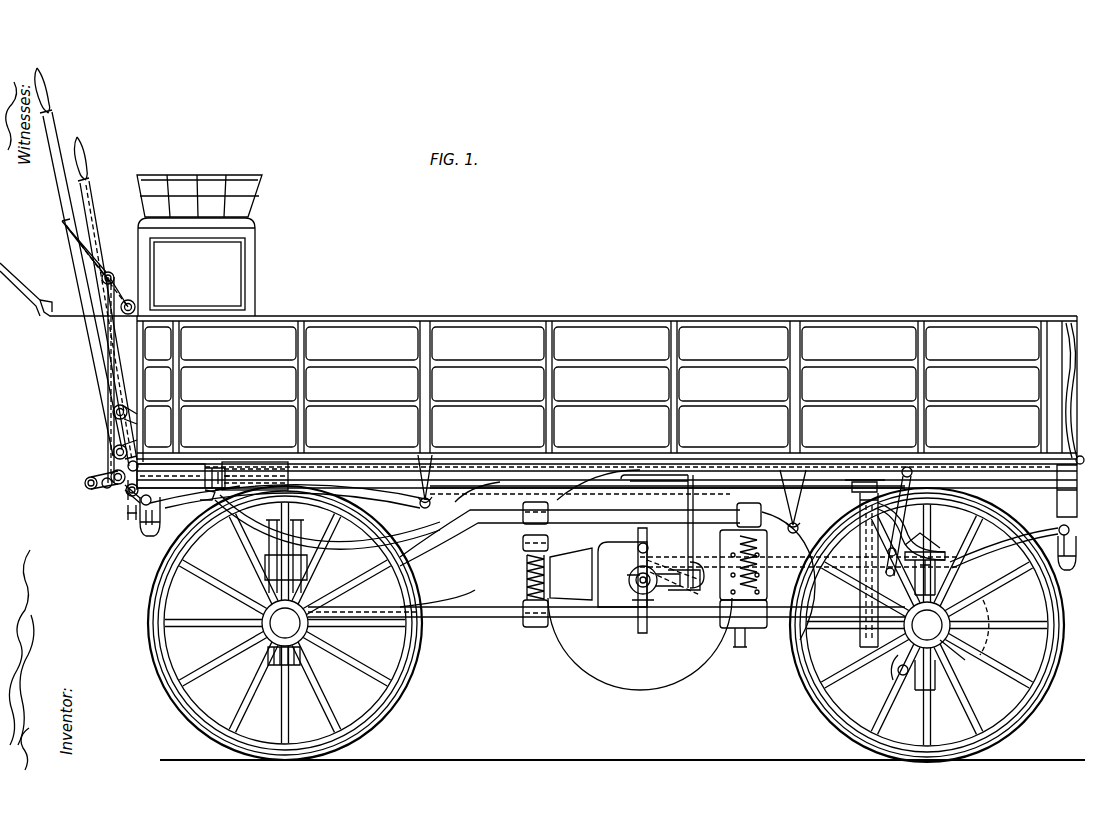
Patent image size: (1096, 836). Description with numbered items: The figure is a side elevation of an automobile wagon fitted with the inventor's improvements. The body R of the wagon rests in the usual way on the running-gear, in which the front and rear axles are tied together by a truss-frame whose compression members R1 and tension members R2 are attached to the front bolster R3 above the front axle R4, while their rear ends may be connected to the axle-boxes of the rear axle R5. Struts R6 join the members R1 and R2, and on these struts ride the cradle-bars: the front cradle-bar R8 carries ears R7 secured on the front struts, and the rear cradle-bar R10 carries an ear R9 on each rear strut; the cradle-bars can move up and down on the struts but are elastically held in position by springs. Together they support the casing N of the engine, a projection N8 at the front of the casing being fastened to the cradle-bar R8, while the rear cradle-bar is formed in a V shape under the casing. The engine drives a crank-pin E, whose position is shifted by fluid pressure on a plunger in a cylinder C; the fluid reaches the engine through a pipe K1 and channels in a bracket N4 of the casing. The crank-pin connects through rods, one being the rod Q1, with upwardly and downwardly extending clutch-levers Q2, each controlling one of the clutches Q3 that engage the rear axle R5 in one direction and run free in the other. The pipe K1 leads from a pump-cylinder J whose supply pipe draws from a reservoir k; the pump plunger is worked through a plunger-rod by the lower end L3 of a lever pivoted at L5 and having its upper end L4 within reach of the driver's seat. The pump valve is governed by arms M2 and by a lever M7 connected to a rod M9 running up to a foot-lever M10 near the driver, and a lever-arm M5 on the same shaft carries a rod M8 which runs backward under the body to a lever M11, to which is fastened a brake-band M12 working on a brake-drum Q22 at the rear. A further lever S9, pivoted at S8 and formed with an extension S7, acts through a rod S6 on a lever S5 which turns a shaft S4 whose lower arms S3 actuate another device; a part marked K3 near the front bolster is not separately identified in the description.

The body of the wagon R is at (607, 403).
The upper end of lever L4 is at (66, 190).
The lever S9 is at (92, 229).
The foot-lever M10 is at (82, 246).
The rod M9 is at (108, 341).
The pivot of lever S9 S8 is at (112, 415).
The pivot of lever L5 is at (110, 452).
The lower end of lever L3 is at (106, 466).
The extension of lever S9 S7 is at (100, 481).
The lever-arm M5 is at (86, 486).
The rod S6 is at (110, 486).
The lever M7 is at (120, 496).
The rearwardly-extending arms M2 is at (130, 515).
The pipe K1 is at (200, 484).
The pump-cylinder J is at (183, 482).
The reservoir k is at (253, 490).
The front bolster K3 is at (217, 496).
The front bolster R3 is at (268, 573).
The front axle R4 is at (285, 623).
The compression members R1 is at (468, 530).
The ears or projections R7 is at (548, 542).
The cradle-bar R8 is at (526, 574).
The struts R6 is at (524, 584).
The tension members R2 is at (481, 604).
The projection N8 is at (548, 576).
The crank-pin E is at (622, 574).
The casing N is at (650, 580).
The bracket N4 is at (668, 600).
The cylinder C is at (640, 580).
The rod Q1 is at (800, 567).
The ear or projection R9 is at (743, 551).
The cradle-bar R10 is at (715, 645).
The lever S5 is at (855, 482).
The shaft S4 is at (859, 502).
The rod M8 is at (914, 476).
The lever M11 is at (903, 497).
The clutch-lever Q2 is at (942, 548).
The brake-band M12 is at (962, 574).
The brake-drum Q22 is at (1001, 626).
The rear axle R5 is at (927, 625).
The arms S3 is at (893, 674).
The clutches Q3 is at (962, 670).